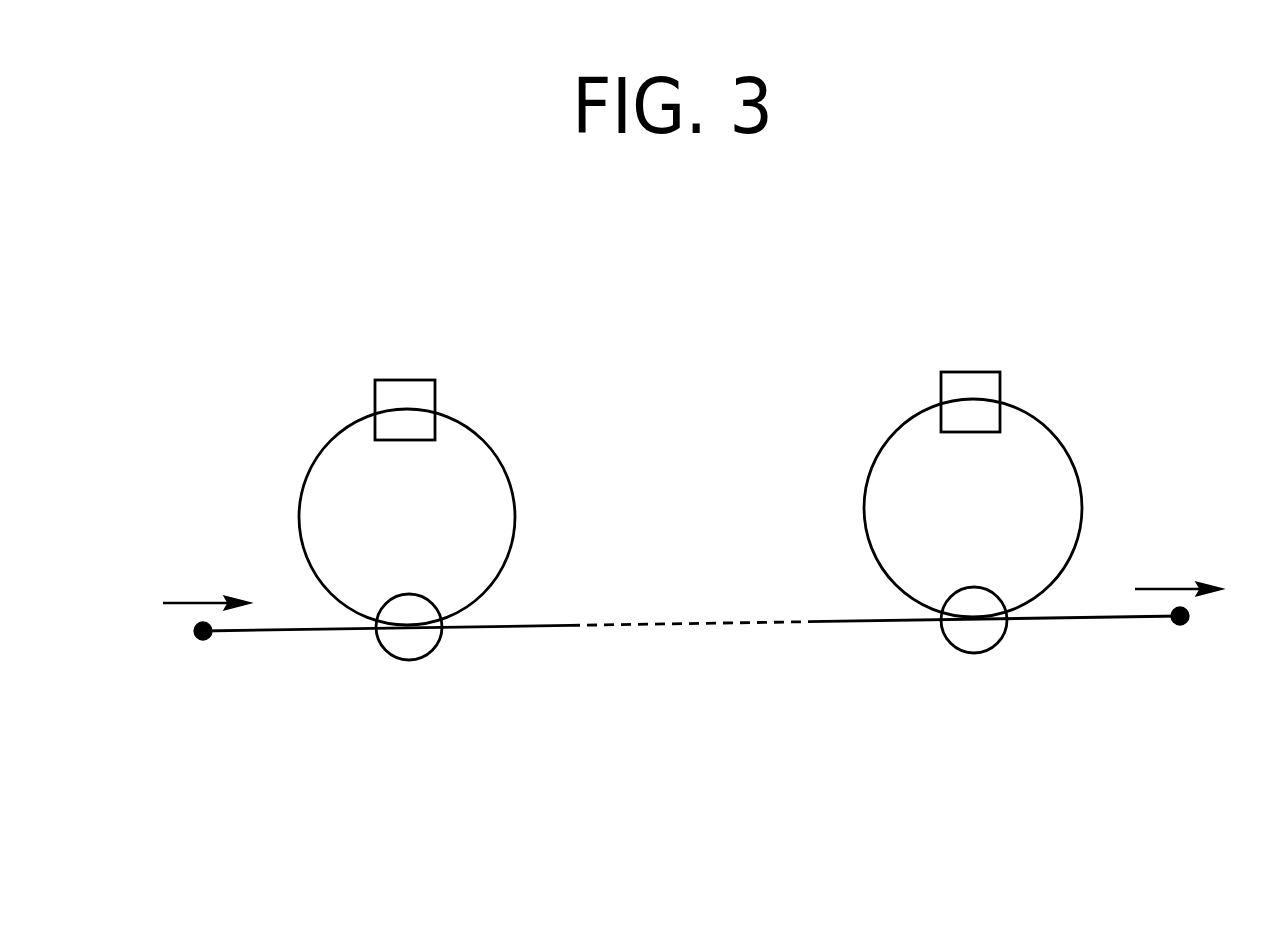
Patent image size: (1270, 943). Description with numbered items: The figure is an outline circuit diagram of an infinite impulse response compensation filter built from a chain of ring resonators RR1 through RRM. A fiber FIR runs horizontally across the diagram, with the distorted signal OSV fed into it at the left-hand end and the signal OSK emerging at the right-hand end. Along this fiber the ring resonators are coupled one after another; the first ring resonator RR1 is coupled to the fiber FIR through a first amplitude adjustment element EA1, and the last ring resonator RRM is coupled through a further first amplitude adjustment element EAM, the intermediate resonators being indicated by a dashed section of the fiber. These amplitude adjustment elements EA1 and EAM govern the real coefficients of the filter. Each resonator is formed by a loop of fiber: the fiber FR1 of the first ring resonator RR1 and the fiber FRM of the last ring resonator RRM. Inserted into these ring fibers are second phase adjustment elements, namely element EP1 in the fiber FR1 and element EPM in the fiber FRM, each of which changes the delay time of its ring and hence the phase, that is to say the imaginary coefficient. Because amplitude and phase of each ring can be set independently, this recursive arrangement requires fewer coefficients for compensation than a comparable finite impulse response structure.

The fiber FIR is at (260, 631).
The distorted signal OSV is at (207, 583).
The output optical signal OSK is at (1179, 568).
The ring resonator RR1 is at (423, 527).
The ring resonator RRM is at (978, 521).
The fiber of the ring resonator FR1 is at (309, 470).
The fiber of the ring resonator FRM is at (872, 463).
The second phase adjustment element EP1 is at (412, 373).
The second phase adjustment element EPM is at (980, 365).
The first amplitude adjustment element EA1 is at (419, 671).
The first amplitude adjustment element EAM is at (988, 665).